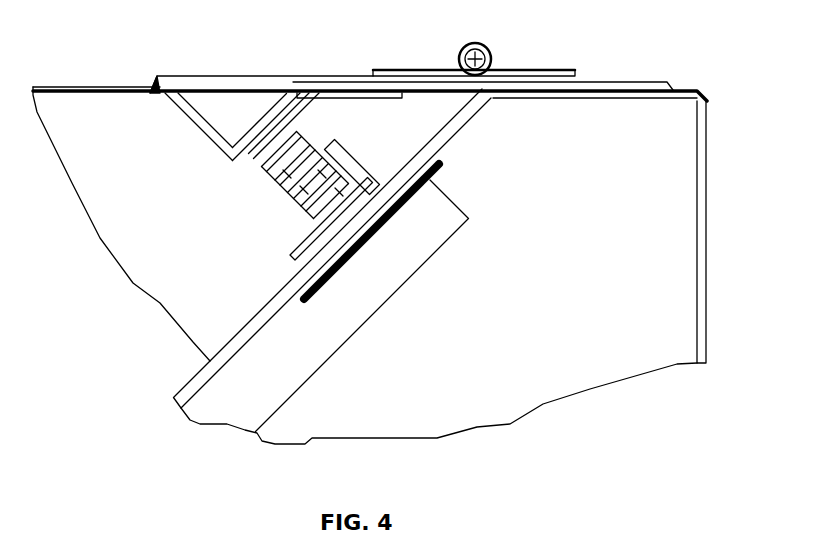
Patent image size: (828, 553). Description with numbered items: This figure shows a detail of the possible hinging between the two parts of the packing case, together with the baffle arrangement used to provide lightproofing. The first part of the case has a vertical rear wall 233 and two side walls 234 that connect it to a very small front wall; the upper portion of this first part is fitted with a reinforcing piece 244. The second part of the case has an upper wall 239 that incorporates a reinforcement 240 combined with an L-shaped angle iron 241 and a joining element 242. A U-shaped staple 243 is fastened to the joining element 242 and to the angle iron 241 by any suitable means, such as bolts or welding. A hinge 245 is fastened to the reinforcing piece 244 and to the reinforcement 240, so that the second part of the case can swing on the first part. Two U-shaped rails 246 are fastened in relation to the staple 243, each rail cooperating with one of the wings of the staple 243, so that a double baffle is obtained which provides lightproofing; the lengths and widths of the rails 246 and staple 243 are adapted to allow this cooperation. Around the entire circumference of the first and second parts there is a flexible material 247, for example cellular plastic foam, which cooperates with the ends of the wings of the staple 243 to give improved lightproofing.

The rear wall 233 is at (700, 235).
The side walls 234 is at (424, 364).
The upper wall 239 is at (68, 87).
The reinforcement 240 is at (181, 78).
The L-shaped angle iron 241 is at (192, 123).
The joining element 242 is at (293, 88).
The U-shaped staple 243 is at (238, 165).
The reinforcing piece 244 is at (607, 84).
The hinge 245 is at (490, 45).
The U-shaped rails 246 is at (304, 216).
The flexible material 247 is at (302, 246).